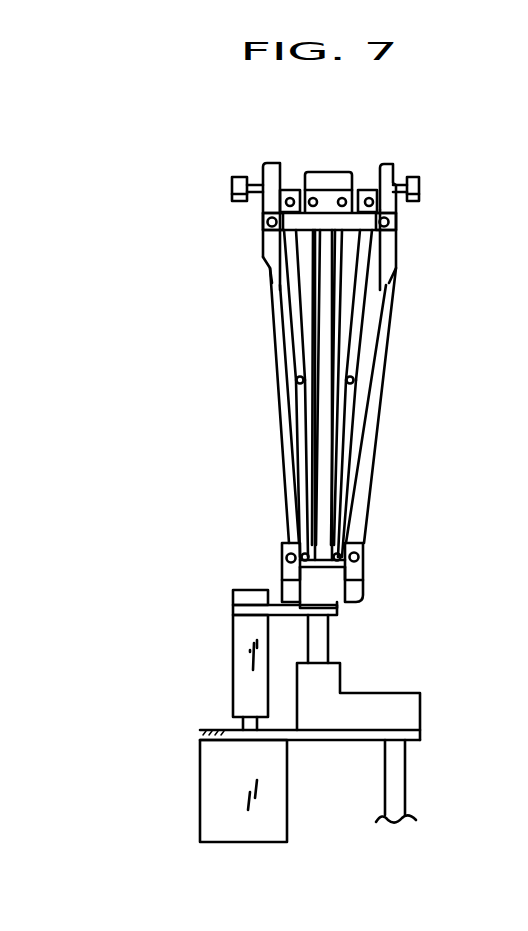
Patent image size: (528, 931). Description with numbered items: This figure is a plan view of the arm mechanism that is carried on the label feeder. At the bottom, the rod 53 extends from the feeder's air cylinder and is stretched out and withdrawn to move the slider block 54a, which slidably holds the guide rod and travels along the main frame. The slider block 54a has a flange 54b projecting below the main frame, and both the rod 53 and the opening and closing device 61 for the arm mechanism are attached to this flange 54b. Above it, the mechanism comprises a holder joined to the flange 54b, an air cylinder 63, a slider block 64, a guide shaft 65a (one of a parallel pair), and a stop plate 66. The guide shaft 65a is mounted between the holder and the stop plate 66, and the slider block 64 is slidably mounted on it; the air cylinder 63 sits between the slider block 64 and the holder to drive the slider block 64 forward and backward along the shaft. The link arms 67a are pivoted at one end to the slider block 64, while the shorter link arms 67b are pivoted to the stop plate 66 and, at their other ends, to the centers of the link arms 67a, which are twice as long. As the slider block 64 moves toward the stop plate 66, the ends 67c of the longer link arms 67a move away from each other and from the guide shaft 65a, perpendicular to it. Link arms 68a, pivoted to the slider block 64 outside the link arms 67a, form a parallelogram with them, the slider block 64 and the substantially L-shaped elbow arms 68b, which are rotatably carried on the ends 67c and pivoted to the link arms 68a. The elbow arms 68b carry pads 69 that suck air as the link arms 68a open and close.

The rod 53 is at (405, 782).
The slider block 54a is at (416, 710).
The flange 54b is at (218, 730).
The opening and closing device 61 is at (200, 783).
The air cylinder 63 is at (248, 642).
The slider block 64 is at (310, 582).
The guide shaft 65a is at (324, 518).
The stop plate 66 is at (340, 180).
The link arm 67a is at (348, 430).
The link arm 67b is at (307, 318).
The other end of link arm 67c is at (288, 192).
The link arm 68a is at (275, 353).
The elbow arm 68b is at (276, 163).
The pad 69 is at (231, 190).